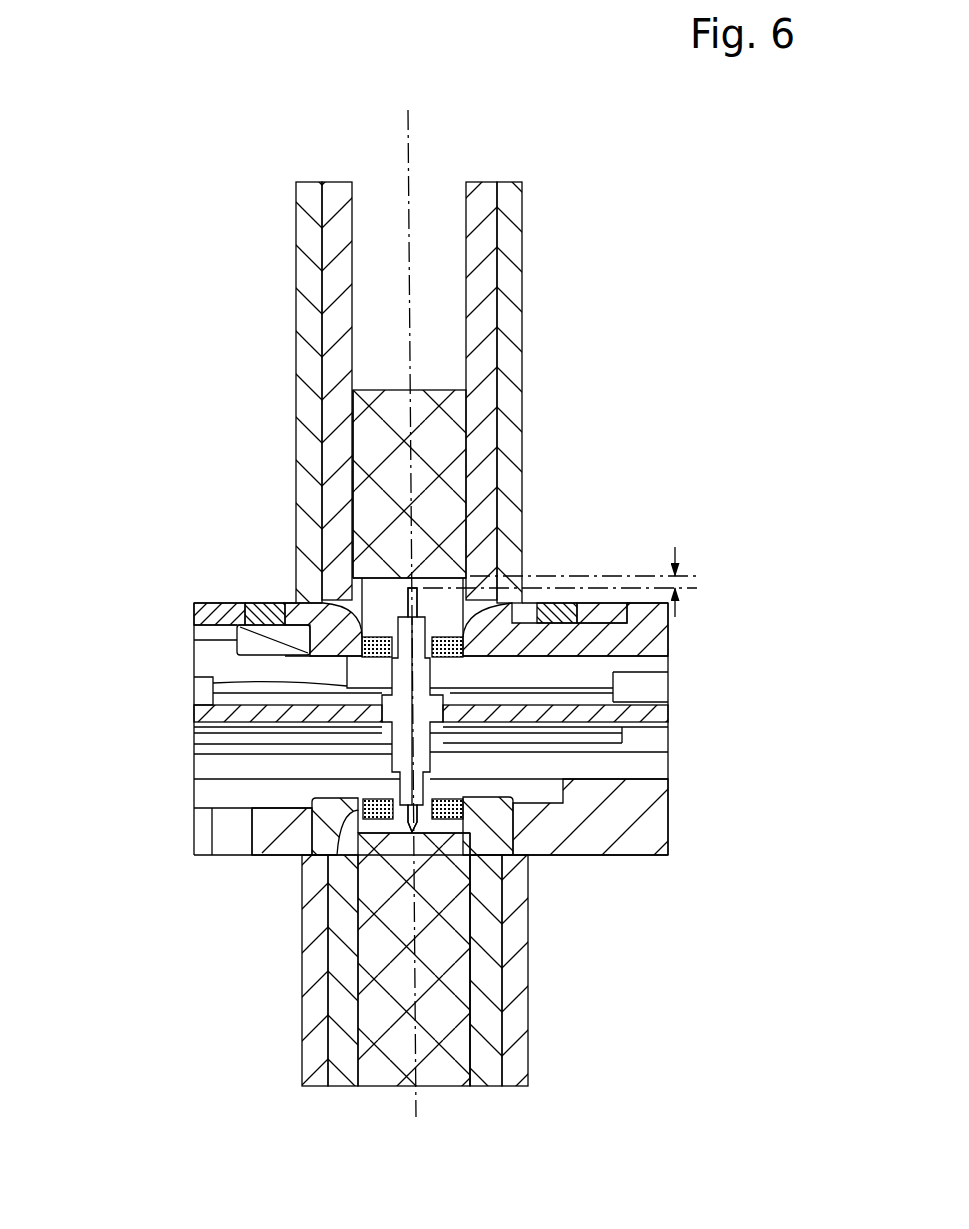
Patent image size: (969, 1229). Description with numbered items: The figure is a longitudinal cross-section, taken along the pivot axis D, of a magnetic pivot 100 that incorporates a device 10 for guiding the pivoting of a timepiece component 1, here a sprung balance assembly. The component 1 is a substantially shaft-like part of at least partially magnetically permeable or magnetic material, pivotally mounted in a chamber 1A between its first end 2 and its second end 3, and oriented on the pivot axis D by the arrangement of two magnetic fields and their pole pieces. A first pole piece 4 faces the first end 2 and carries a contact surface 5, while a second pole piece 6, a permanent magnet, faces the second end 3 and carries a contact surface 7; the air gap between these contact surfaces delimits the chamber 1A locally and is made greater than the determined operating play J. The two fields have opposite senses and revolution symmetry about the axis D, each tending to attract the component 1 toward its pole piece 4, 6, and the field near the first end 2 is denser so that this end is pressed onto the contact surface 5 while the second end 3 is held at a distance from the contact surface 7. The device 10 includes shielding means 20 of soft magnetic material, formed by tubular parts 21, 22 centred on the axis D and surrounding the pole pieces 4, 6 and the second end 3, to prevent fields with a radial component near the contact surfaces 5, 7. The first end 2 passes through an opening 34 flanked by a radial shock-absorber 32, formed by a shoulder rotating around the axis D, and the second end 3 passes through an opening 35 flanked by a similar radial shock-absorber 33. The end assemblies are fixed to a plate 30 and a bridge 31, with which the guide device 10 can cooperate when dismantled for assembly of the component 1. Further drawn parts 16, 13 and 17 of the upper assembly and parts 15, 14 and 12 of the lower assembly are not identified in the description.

The magnetic pivot 100 is at (692, 175).
The pivot axis D is at (414, 120).
The operating play J is at (567, 582).
The shielding means 20 is at (291, 198).
The inner sleeve of upper tube 16 is at (346, 265).
The inner layer of upper tube 13 is at (488, 205).
The tubular part 22 is at (512, 250).
The second pole piece 6 is at (440, 410).
The insert side wall 17 is at (358, 438).
The contact surface 7 is at (434, 557).
The guide device 10 is at (392, 561).
The radial shock-absorber 33 is at (322, 601).
The second end 3 is at (403, 586).
The opening 35 is at (446, 638).
The bridge 31 is at (176, 615).
The timepiece component 1 is at (640, 710).
The chamber 1A is at (235, 682).
The opening 34 is at (438, 786).
The contact surface 5 is at (446, 825).
The plate 30 is at (179, 828).
The radial shock-absorber 32 is at (327, 858).
The first end 2 is at (411, 836).
The lower tube inner wall 15 is at (476, 955).
The lower insert 14 is at (462, 893).
The first pole piece 4 is at (458, 938).
The tubular part 21 is at (515, 1015).
The lower tube inner sleeve 12 is at (495, 1043).